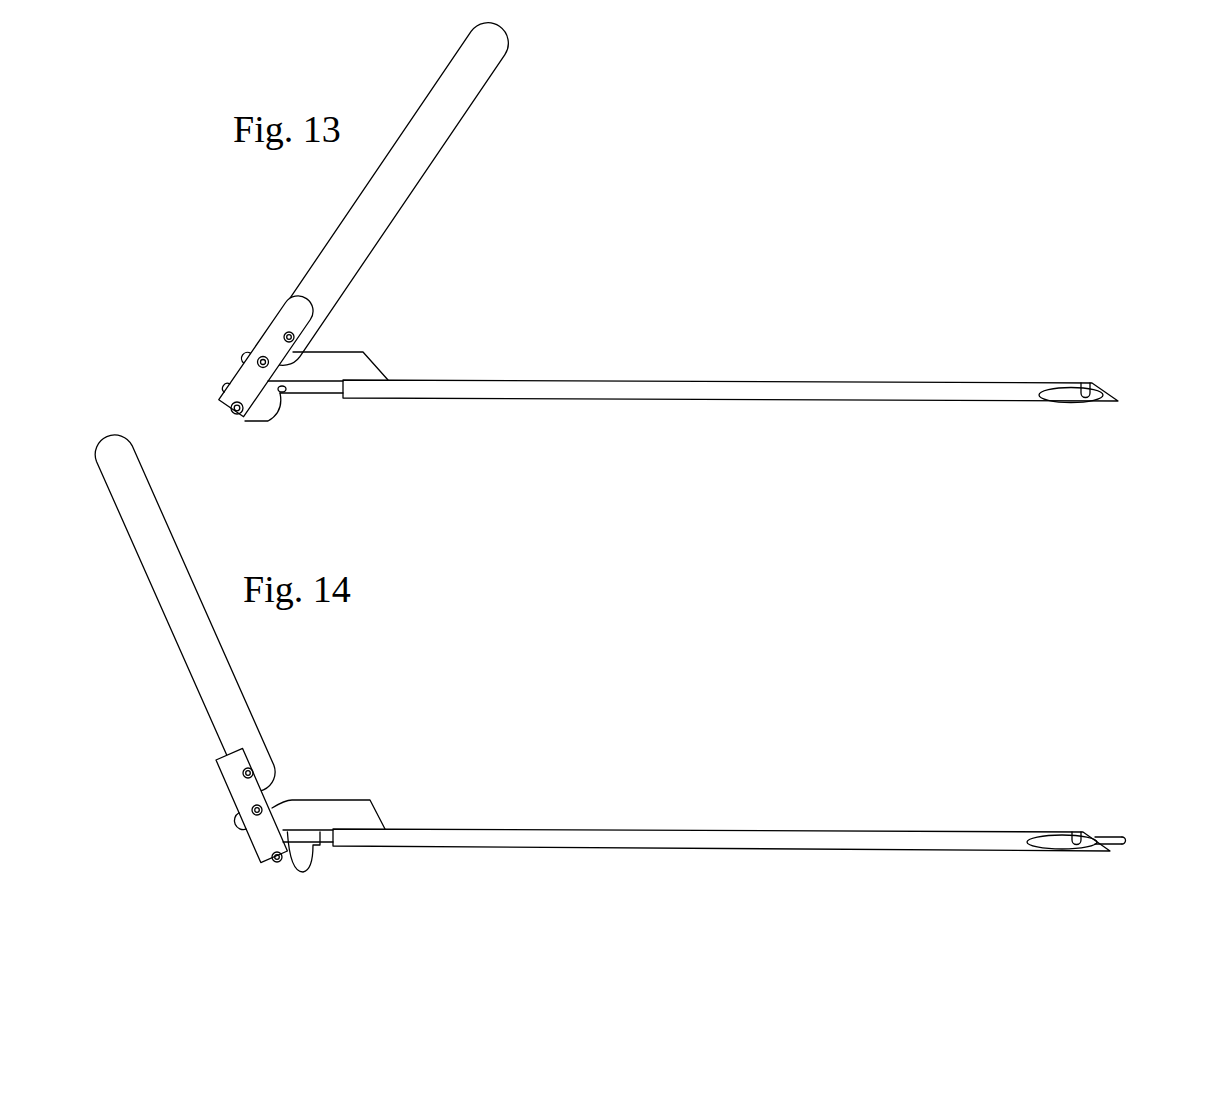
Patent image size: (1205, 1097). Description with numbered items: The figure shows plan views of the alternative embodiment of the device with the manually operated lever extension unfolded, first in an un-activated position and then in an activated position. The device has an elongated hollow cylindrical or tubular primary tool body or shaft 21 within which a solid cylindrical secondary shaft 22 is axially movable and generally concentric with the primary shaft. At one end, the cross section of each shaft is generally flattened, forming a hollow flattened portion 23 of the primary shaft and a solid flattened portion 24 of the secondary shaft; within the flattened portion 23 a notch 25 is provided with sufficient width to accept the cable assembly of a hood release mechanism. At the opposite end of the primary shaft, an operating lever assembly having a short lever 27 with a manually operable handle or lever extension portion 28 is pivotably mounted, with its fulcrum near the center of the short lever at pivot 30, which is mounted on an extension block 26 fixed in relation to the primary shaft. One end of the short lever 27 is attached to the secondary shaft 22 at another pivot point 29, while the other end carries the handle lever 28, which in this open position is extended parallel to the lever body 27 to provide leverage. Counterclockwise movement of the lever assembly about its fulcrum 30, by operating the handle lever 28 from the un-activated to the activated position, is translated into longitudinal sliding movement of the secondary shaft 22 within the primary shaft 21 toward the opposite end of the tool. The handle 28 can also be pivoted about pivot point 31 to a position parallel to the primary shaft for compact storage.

In FIG. 13, the primary tool body or shaft 21 is at (768, 393).
In FIG. 14, the primary tool body or shaft 21 is at (682, 840).
In FIG. 13, the secondary shaft 22 is at (316, 396).
In FIG. 14, the secondary shaft 22 is at (330, 846).
In FIG. 13, the flattened portion of the primary shaft 23 is at (1068, 394).
In FIG. 14, the flattened portion of the primary shaft 23 is at (1062, 844).
In FIG. 14, the flattened portion of the secondary shaft 24 is at (1128, 840).
In FIG. 13, the notch 25 is at (1084, 391).
In FIG. 14, the notch 25 is at (1076, 838).
In FIG. 13, the extension block 26 is at (372, 357).
In FIG. 14, the extension block 26 is at (357, 812).
In FIG. 13, the short lever 27 is at (246, 381).
In FIG. 14, the short lever 27 is at (268, 815).
In FIG. 13, the handle lever 28 is at (397, 188).
In FIG. 14, the handle lever 28 is at (198, 668).
In FIG. 13, the pivot point 29 is at (249, 435).
In FIG. 14, the pivot point 29 is at (273, 858).
In FIG. 13, the pivot 30 is at (259, 358).
In FIG. 14, the pivot 30 is at (252, 810).
In FIG. 13, the pivot point 31 is at (288, 332).
In FIG. 14, the pivot point 31 is at (244, 771).